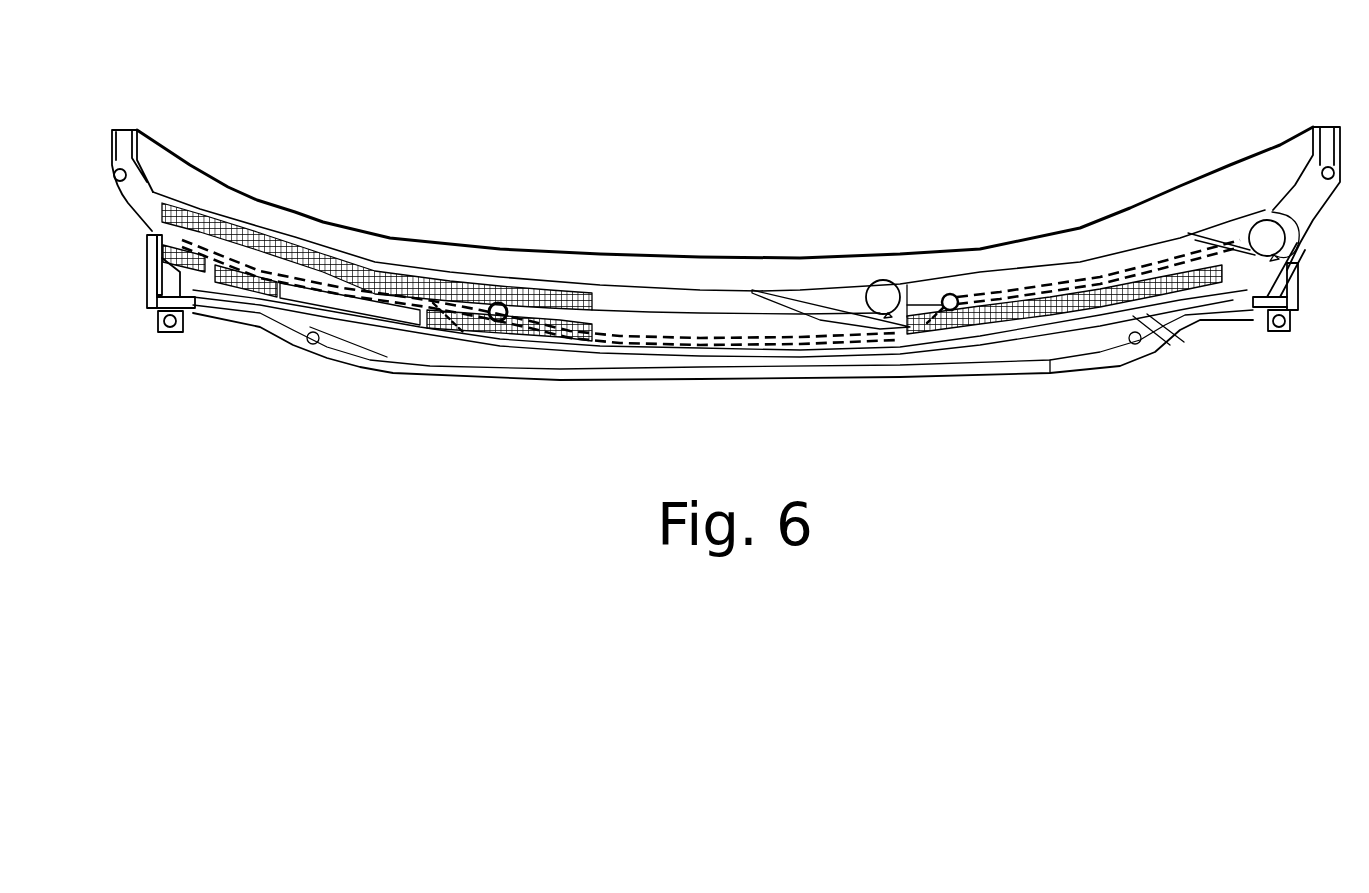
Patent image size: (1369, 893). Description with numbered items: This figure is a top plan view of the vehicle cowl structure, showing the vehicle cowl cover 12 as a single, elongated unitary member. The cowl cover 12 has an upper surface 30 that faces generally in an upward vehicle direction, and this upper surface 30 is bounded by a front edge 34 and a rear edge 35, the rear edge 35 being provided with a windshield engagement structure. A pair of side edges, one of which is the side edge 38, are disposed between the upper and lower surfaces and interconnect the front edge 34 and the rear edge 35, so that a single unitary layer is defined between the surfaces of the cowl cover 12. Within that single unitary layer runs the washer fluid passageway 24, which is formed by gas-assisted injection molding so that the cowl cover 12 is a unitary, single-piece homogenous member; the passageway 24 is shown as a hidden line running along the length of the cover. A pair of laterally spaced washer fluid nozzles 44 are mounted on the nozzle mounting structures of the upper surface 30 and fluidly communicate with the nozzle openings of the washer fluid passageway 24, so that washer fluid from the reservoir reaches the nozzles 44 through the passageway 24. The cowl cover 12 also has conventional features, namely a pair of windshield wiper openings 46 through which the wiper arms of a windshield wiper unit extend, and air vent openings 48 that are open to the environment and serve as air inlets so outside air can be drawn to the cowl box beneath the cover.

The vehicle cowl cover 12 is at (800, 200).
The washer fluid passageway 24 is at (700, 333).
The upper surface 30 is at (293, 223).
The front edge 34 is at (548, 381).
The rear edge 35 is at (404, 238).
The side edge 38 is at (118, 182).
The washer fluid nozzle 44 is at (500, 303).
The windshield wiper opening 46 is at (885, 280).
The air vent opening 48 is at (577, 292).